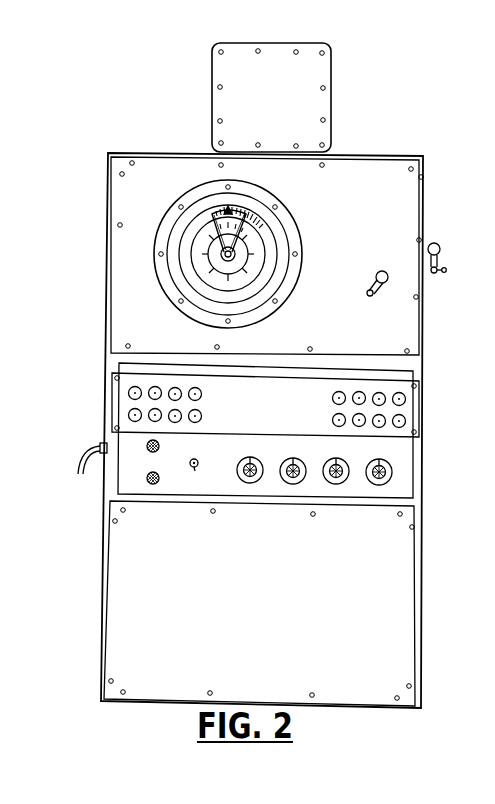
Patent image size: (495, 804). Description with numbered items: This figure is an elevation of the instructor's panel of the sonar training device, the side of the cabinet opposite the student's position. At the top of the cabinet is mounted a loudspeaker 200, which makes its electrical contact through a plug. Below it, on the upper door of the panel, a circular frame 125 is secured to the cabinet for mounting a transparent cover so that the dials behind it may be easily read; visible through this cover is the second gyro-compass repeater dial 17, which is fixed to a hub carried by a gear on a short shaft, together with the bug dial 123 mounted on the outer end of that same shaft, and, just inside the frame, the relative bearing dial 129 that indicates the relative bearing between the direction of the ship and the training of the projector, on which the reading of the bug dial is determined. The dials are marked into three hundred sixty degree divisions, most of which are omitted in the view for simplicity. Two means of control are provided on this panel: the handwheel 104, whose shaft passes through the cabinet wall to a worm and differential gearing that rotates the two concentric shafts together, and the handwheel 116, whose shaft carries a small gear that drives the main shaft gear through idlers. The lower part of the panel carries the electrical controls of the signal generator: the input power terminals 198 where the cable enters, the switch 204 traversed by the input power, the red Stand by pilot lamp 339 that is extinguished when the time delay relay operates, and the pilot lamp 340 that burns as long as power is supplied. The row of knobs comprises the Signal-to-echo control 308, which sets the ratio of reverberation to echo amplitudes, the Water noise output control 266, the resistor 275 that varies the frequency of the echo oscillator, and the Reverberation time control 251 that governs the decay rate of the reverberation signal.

The loudspeaker 200 is at (331, 98).
The circular frame 125 is at (188, 199).
The bug dial 123 is at (247, 203).
The relative bearing dial 129 is at (272, 223).
The second gyro-compass repeater dial 17 is at (207, 257).
The handwheel 104 is at (441, 250).
The handwheel 116 is at (386, 283).
The terminals 198 is at (100, 447).
The red pilot lamp 339 is at (148, 450).
The pilot lamp 340 is at (152, 485).
The switch 204 is at (194, 471).
The control 308 is at (250, 483).
The output control 266 is at (293, 484).
The resistor 275 is at (336, 484).
The control 251 is at (379, 485).